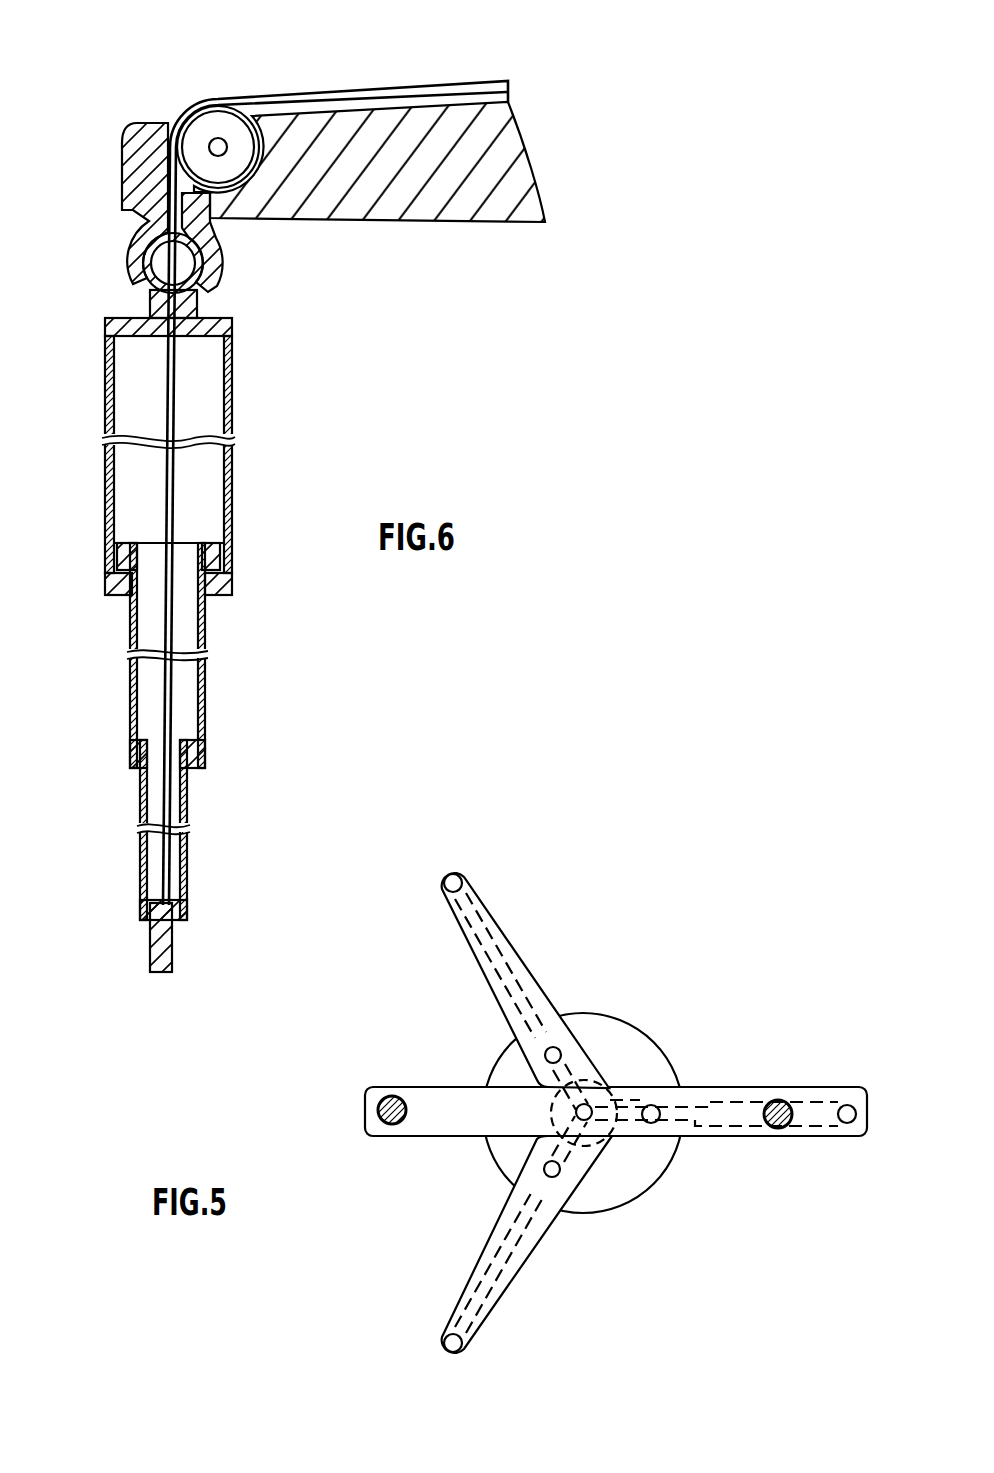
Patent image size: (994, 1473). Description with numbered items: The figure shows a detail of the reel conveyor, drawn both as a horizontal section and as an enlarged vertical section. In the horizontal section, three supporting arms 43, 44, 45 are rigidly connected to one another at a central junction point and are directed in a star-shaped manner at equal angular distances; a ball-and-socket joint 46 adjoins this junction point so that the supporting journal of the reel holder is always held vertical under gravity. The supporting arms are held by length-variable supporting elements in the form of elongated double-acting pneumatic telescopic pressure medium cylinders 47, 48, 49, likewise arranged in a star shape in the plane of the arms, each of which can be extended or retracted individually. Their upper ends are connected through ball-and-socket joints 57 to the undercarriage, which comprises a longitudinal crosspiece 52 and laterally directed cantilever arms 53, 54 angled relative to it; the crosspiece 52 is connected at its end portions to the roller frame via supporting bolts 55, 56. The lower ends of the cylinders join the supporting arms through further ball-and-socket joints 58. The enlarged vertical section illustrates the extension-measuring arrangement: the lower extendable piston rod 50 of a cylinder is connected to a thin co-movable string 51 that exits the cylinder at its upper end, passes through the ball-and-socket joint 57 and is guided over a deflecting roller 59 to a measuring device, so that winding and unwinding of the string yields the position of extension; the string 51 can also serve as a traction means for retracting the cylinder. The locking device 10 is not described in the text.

In FIG. 5, the locking device 10 is at (650, 1026).
In FIG. 5, the supporting arm 43 is at (598, 1090).
In FIG. 5, the supporting arm 44 is at (630, 1120).
In FIG. 5, the supporting arm 45 is at (557, 1148).
In FIG. 5, the ball-and-socket joint 46 is at (603, 1093).
In FIG. 6, the pressure medium cylinder 47 is at (168, 619).
In FIG. 5, the pressure medium cylinder 47 is at (520, 985).
In FIG. 6, the pressure medium cylinder 48 is at (256, 619).
In FIG. 5, the pressure medium cylinder 48 is at (747, 1120).
In FIG. 6, the pressure medium cylinder 49 is at (213, 653).
In FIG. 5, the pressure medium cylinder 49 is at (517, 1240).
In FIG. 6, the piston rod 50 is at (172, 940).
In FIG. 6, the string 51 is at (487, 86).
In FIG. 6, the crosspiece 52 is at (407, 218).
In FIG. 5, the crosspiece 52 is at (440, 1095).
In FIG. 6, the cantilever arm 53 is at (369, 162).
In FIG. 5, the cantilever arm 53 is at (497, 918).
In FIG. 6, the cantilever arm 54 is at (495, 180).
In FIG. 5, the cantilever arm 54 is at (510, 1287).
In FIG. 5, the supporting bolt 55 is at (388, 1124).
In FIG. 5, the supporting bolt 56 is at (782, 1100).
In FIG. 6, the ball-and-socket joint 57 is at (112, 277).
In FIG. 5, the ball-and-socket joint 57 is at (457, 870).
In FIG. 5, the ball-and-socket joint 58 is at (558, 1048).
In FIG. 6, the deflecting roller 59 is at (226, 121).